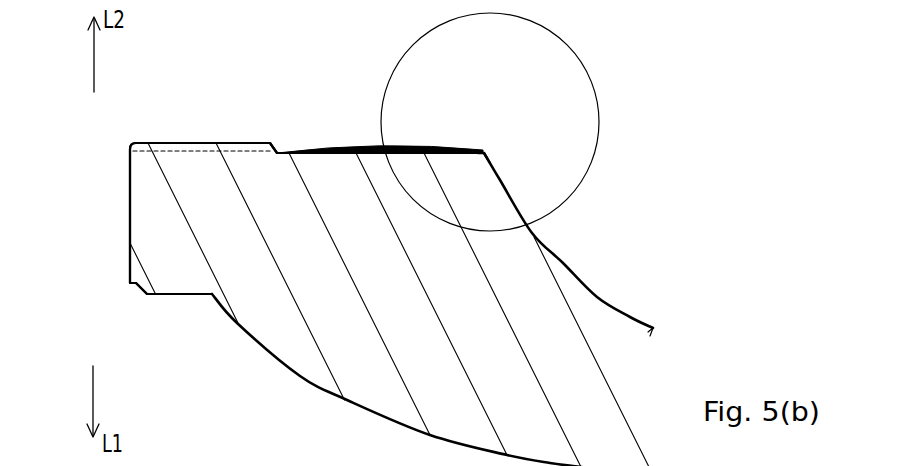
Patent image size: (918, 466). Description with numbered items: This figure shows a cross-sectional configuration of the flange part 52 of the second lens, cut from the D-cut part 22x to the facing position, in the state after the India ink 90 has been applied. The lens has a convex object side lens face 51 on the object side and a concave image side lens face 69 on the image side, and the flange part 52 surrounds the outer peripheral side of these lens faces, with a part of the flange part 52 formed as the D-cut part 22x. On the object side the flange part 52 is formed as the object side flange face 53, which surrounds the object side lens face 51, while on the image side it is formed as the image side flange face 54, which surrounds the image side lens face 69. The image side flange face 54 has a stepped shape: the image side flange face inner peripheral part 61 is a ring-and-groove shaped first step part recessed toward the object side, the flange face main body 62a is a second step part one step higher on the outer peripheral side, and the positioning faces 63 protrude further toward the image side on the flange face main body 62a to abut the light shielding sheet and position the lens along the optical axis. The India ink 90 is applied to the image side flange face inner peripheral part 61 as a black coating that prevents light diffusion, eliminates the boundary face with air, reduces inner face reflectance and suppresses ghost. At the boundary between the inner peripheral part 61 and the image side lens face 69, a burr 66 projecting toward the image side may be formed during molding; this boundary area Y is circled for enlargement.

The D-cut part 22x is at (130, 208).
The flange part 52 is at (128, 155).
The flange face main body 62a is at (167, 152).
The positioning face 63 is at (182, 143).
The image side flange face 54 is at (270, 143).
The image side flange face inner peripheral part 61 is at (347, 150).
The India ink 90 is at (435, 150).
The burr 66 is at (483, 150).
The image side lens face 69 is at (563, 263).
The object side flange face 53 is at (167, 295).
The object side lens face 51 is at (358, 406).
The boundary area Y is at (606, 117).